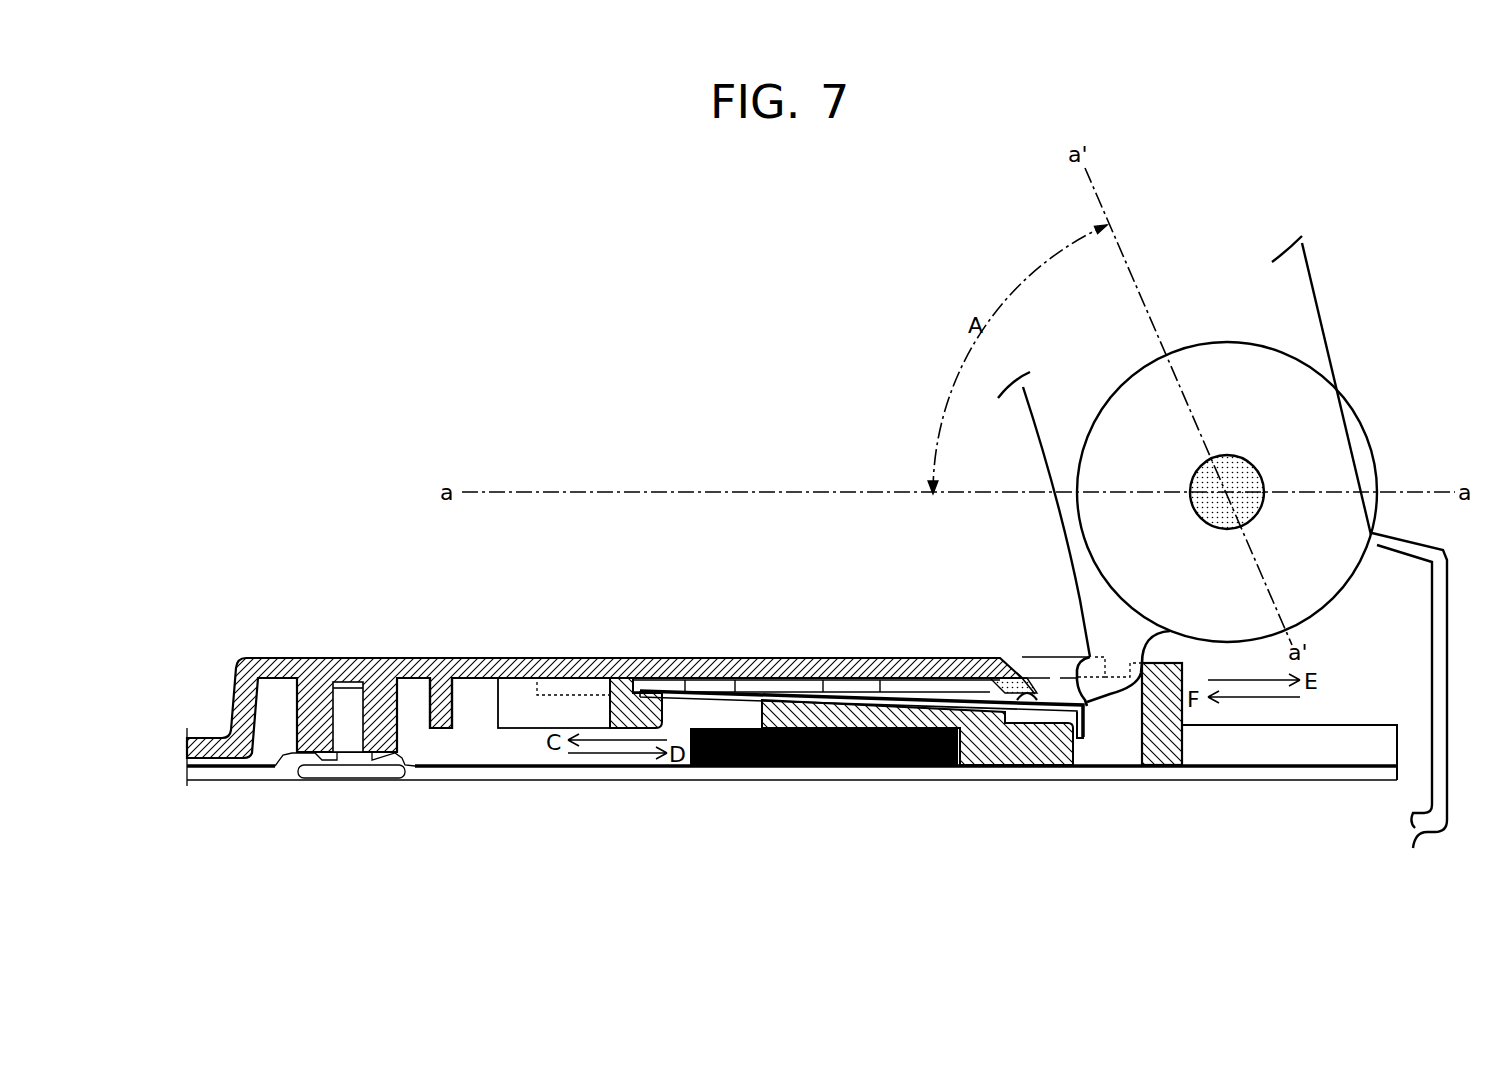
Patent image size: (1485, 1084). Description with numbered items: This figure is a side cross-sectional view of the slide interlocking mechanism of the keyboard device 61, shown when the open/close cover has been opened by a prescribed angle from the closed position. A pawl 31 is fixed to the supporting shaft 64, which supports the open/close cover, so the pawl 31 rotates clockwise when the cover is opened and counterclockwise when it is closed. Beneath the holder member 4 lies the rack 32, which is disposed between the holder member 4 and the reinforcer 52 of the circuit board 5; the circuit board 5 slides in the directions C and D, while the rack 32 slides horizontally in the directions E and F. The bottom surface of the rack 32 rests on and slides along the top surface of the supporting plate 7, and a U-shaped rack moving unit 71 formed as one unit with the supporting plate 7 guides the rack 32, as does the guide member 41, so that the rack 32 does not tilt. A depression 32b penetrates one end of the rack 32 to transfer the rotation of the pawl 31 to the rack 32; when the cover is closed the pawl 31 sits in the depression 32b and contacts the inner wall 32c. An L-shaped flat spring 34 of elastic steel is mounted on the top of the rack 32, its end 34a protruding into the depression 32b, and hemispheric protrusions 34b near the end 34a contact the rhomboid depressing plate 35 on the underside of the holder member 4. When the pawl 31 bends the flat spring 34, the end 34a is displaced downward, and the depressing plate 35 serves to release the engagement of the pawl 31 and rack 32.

The holder member 4 is at (598, 656).
The guide member 41 is at (452, 700).
The circuit board 5 is at (508, 770).
The supporting plate 7 is at (622, 782).
The reinforcer 52 is at (798, 768).
The rack 32 is at (798, 688).
The depression 32b is at (1110, 757).
The inner wall 32c is at (1142, 752).
The flat spring 34 is at (958, 690).
The end of flat spring 34a is at (1087, 740).
The hemispheric protrusions 34b is at (1043, 693).
The depressing plate 35 is at (1000, 660).
The pawl 31 is at (1085, 595).
The supporting shaft 64 is at (1210, 512).
The keyboard device 61 is at (1445, 667).
The rack moving unit 71 is at (1352, 735).